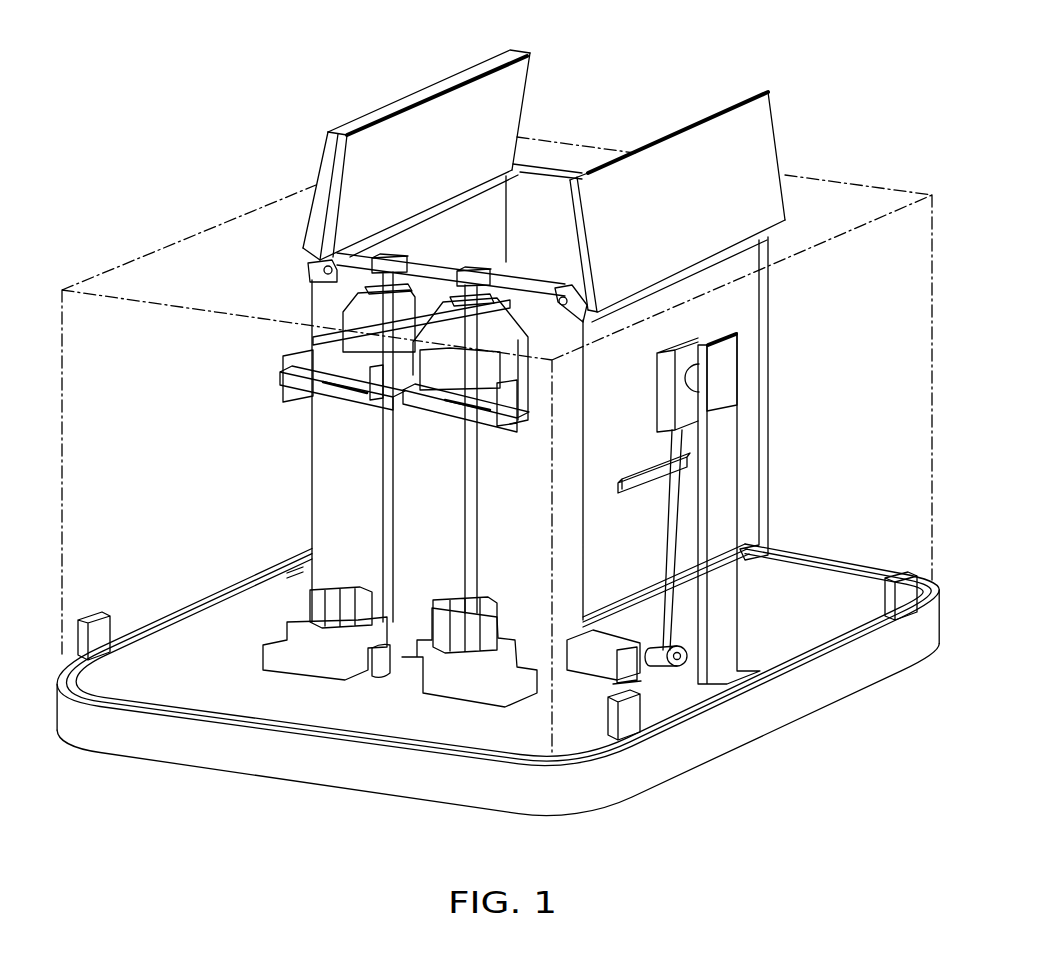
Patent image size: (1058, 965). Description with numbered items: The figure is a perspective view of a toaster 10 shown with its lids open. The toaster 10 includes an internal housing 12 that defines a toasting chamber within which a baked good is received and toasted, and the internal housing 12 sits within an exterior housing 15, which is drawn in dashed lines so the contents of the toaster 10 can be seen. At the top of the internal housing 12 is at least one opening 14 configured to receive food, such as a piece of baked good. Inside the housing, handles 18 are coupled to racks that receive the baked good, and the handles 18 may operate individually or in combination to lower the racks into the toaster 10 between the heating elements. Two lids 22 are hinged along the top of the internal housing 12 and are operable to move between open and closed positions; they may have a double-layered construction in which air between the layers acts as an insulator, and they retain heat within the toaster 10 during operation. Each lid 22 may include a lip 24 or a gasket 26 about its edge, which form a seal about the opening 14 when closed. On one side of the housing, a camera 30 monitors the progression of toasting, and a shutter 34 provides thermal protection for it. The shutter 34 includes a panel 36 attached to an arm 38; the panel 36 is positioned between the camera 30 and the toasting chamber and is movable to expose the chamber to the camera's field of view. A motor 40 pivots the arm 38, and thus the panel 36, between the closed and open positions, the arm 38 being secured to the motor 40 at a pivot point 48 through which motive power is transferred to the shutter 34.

The toaster 10 is at (826, 115).
The internal housing 12 is at (752, 303).
The opening 14 is at (547, 197).
The exterior housing 15 is at (122, 265).
The handles 18 is at (330, 342).
The lids 22 is at (427, 92).
The lip 24 is at (487, 77).
The gasket 26 is at (342, 157).
The camera 30 is at (693, 381).
The shutter 34 is at (650, 433).
The panel 36 is at (685, 355).
The arm 38 is at (677, 530).
The motor 40 is at (596, 660).
The pivot point 48 is at (681, 648).